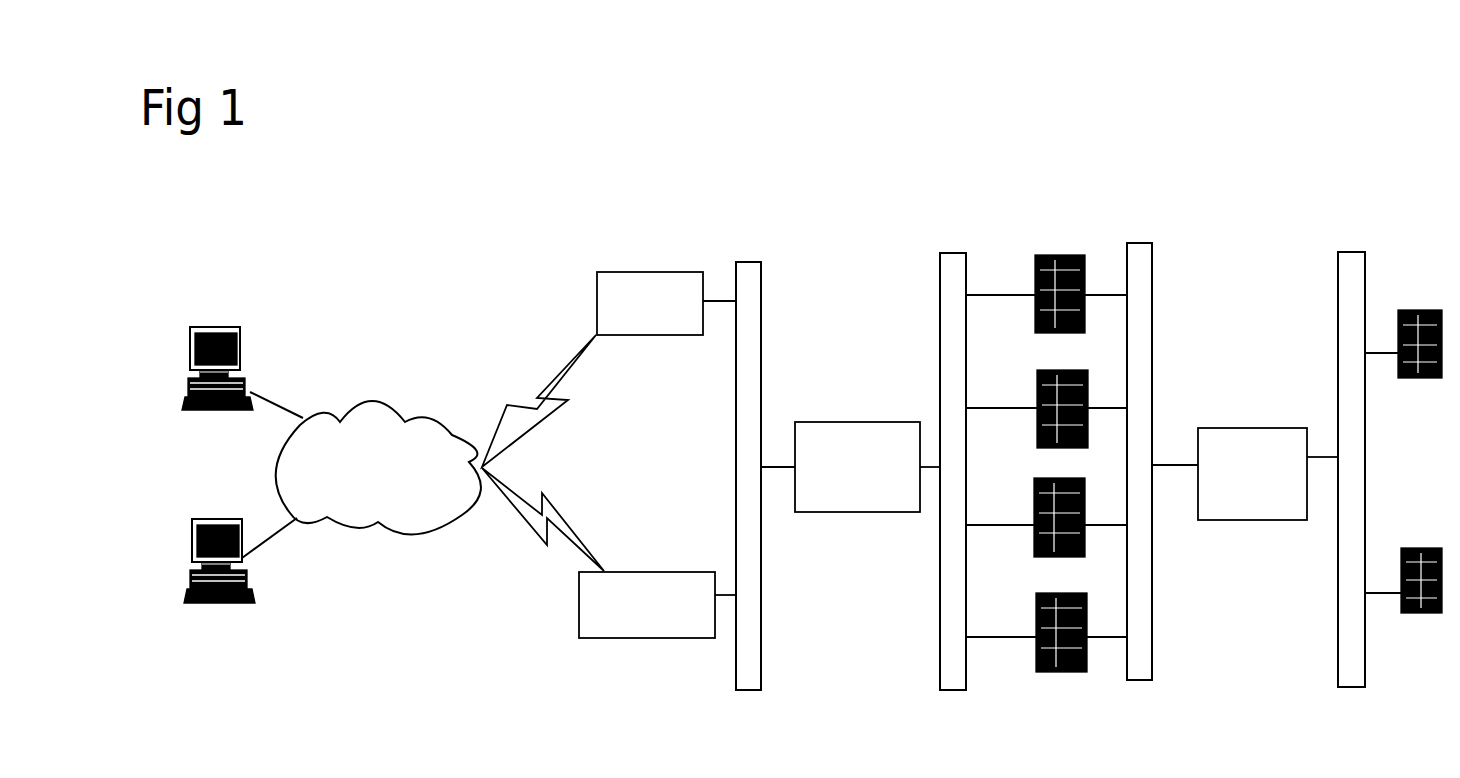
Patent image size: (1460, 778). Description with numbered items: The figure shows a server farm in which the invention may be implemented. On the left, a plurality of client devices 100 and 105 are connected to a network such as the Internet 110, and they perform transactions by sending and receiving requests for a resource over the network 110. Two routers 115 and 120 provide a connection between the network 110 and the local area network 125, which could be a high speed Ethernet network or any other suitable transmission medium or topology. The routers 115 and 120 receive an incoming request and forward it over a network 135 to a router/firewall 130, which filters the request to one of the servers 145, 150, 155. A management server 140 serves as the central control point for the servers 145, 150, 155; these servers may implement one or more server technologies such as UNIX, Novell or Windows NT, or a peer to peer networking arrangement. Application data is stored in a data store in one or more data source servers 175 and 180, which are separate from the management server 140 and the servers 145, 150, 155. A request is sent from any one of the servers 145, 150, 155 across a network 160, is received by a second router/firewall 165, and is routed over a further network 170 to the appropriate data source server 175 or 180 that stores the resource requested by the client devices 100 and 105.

The client device 100 is at (185, 369).
The client device 105 is at (183, 573).
The network 110 is at (342, 454).
The router 115 is at (597, 305).
The router 120 is at (579, 610).
The local area network 125 is at (732, 266).
The router/firewall 130 is at (797, 423).
The network 135 is at (940, 318).
The management server 140 is at (1035, 270).
The server 145 is at (1037, 393).
The server 150 is at (1034, 503).
The server 155 is at (1035, 620).
The network 160 is at (1128, 243).
The router/firewall 165 is at (1213, 428).
The further network 170 is at (1330, 283).
The data source server 175 is at (1413, 310).
The data source server 180 is at (1413, 548).